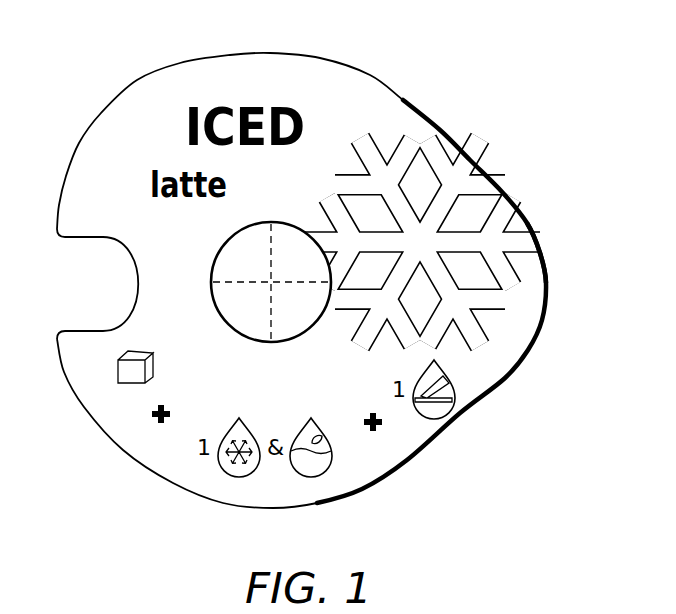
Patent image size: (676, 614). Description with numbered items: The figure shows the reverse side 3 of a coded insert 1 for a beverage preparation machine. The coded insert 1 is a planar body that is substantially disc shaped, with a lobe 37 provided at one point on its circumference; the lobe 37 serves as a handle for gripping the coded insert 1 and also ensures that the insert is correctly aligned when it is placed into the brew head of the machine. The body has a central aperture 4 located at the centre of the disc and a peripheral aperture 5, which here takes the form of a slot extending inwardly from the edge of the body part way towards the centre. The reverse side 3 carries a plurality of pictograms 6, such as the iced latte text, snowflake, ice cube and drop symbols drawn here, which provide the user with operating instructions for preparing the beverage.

The coded insert 1 is at (112, 70).
The reverse side 3 is at (528, 300).
The lobe 37 is at (528, 242).
The central aperture 4 is at (234, 269).
The peripheral aperture 5 is at (81, 287).
The pictograms 6 is at (478, 436).